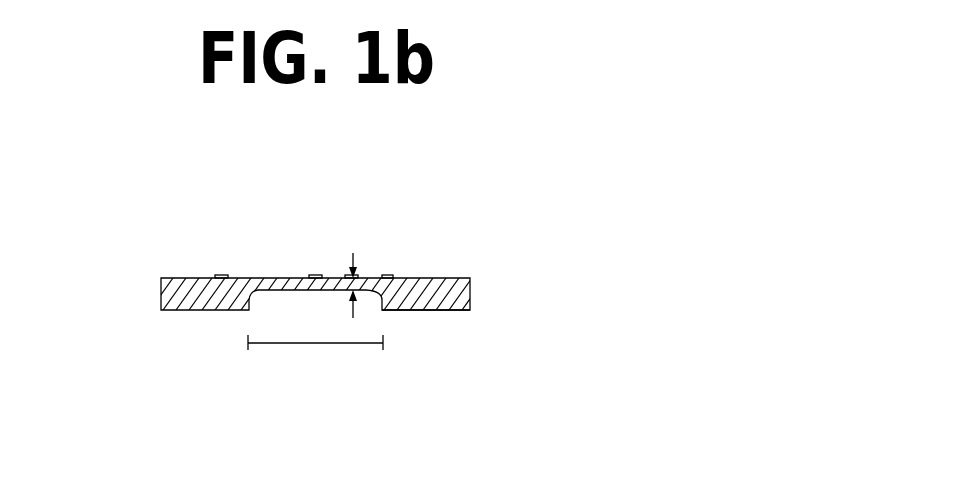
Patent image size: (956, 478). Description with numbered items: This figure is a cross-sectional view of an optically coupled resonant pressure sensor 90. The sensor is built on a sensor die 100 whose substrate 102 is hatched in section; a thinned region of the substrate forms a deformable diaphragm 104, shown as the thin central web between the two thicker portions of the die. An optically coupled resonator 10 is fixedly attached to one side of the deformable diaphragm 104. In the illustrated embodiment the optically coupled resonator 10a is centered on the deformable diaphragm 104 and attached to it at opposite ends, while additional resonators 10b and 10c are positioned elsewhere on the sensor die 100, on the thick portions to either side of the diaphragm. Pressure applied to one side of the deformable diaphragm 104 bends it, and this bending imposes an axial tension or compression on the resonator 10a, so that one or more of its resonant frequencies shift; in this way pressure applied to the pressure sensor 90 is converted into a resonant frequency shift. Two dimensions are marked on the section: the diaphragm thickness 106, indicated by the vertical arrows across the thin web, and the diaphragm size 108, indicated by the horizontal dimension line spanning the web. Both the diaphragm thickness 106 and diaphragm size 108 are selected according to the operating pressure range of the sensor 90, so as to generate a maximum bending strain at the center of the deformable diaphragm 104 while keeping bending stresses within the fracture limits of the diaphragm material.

The optically coupled resonant pressure sensor 90 is at (171, 240).
The optically coupled resonator 10 is at (313, 276).
The optically coupled resonator 10a is at (320, 276).
The additional resonator 10b is at (393, 277).
The additional resonator 10c is at (220, 276).
The sensor die 100 is at (472, 287).
The substrate 102 is at (472, 297).
The deformable diaphragm 104 is at (365, 291).
The diaphragm thickness 106 is at (353, 253).
The diaphragm size 108 is at (330, 343).